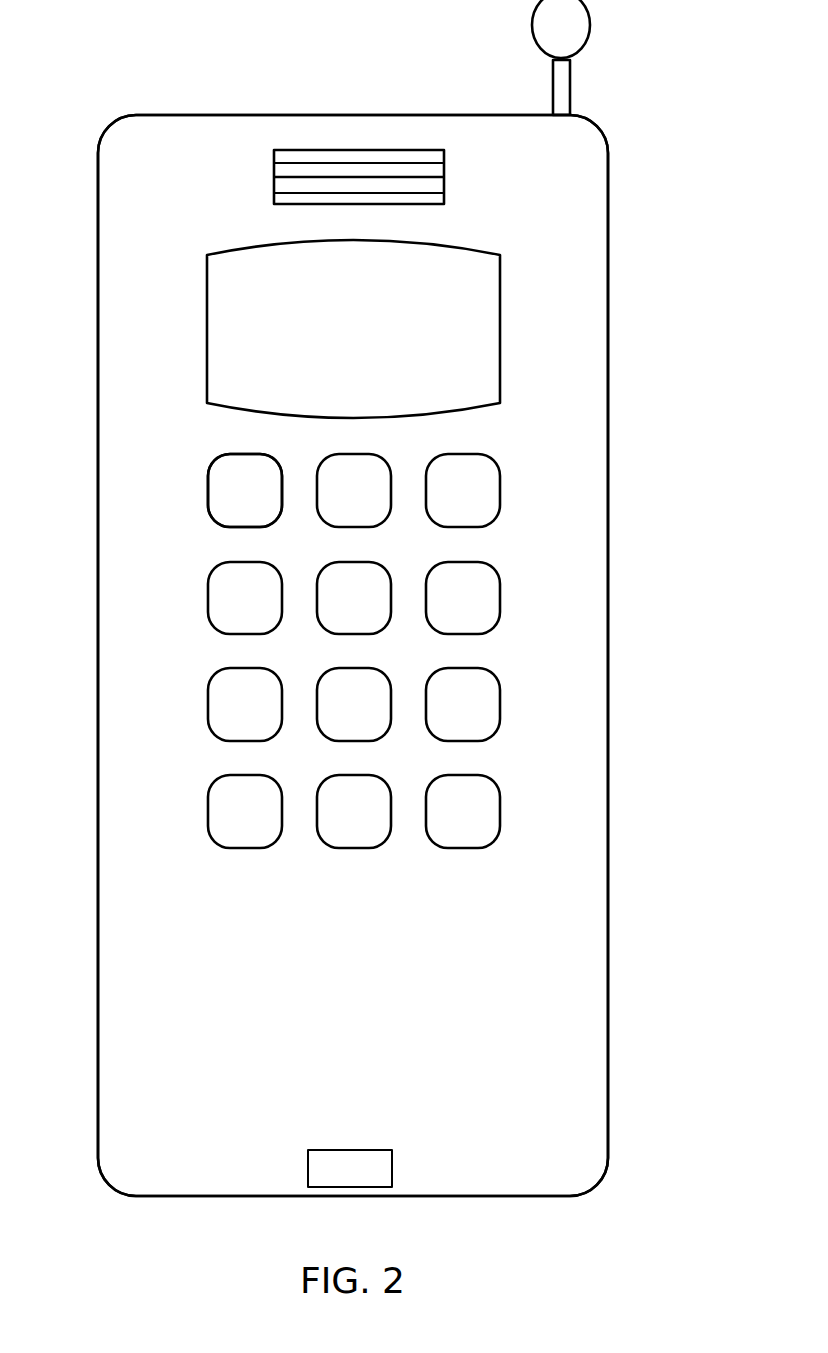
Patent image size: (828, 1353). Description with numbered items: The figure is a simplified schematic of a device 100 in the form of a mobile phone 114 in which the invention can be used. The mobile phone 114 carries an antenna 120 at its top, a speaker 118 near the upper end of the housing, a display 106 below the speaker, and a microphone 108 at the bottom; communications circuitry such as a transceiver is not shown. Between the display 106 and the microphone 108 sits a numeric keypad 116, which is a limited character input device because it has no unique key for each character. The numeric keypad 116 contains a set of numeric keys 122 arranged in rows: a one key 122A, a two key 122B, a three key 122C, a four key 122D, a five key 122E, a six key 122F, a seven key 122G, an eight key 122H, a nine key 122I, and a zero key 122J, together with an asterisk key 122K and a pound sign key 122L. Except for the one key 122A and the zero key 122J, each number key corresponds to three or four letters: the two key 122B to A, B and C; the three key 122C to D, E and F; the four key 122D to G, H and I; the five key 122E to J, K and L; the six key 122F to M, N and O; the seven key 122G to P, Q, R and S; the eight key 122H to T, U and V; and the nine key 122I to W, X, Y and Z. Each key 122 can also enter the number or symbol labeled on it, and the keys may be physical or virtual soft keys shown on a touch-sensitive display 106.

The device 100 is at (66, 534).
The display 106 is at (500, 330).
The microphone 108 is at (348, 1150).
The mobile phone 114 is at (93, 181).
The numeric keypad 116 is at (577, 626).
The speaker 118 is at (444, 178).
The antenna 120 is at (571, 87).
The numeric keys 122 is at (225, 455).
The one key 122A is at (215, 520).
The two key 122B is at (330, 528).
The three key 122C is at (442, 528).
The four key 122D is at (215, 630).
The five key 122E is at (330, 630).
The six key 122F is at (440, 630).
The seven key 122G is at (218, 738).
The eight key 122H is at (328, 738).
The nine key 122I is at (437, 738).
The zero key 122J is at (218, 845).
The asterisk key 122K is at (333, 848).
The pound sign key 122L is at (437, 848).